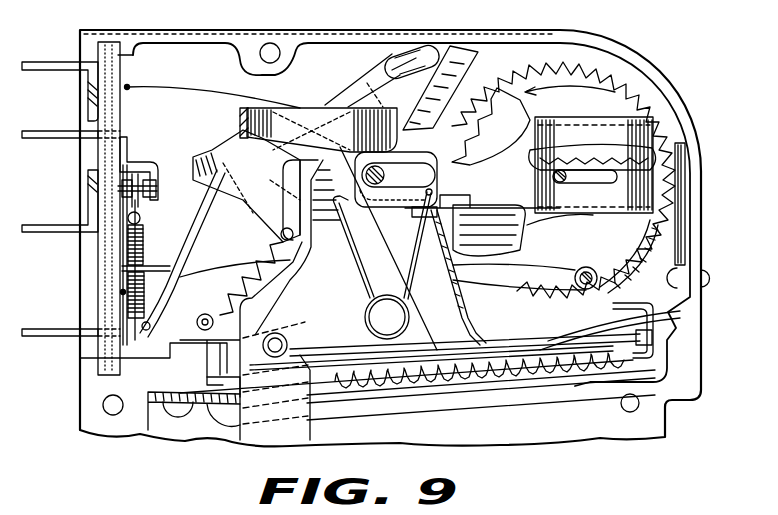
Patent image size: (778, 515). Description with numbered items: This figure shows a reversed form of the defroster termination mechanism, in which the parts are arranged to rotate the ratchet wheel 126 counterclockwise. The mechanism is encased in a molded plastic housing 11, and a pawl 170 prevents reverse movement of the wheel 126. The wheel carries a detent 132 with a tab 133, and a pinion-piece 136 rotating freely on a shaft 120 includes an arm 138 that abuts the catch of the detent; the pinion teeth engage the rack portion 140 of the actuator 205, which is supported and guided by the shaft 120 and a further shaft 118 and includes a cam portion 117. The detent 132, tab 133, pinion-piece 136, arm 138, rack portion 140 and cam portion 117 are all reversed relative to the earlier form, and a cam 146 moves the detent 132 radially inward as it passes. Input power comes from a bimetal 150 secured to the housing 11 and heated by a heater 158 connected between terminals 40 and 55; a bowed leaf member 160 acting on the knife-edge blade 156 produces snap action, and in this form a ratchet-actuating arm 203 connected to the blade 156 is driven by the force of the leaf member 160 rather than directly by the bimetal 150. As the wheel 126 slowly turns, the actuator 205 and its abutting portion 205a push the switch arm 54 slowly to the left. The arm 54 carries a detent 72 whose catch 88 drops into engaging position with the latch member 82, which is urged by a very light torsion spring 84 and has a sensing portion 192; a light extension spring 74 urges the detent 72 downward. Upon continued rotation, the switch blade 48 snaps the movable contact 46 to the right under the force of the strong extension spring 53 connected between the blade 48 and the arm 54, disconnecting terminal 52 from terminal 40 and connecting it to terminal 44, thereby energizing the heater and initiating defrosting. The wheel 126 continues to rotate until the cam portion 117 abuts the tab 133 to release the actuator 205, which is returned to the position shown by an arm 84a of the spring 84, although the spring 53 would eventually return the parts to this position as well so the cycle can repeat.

The housing 11 is at (178, 36).
The terminal 55 is at (52, 62).
The terminal 44 is at (52, 131).
The terminal 40 is at (52, 225).
The terminal 52 is at (52, 329).
The movable contact 46 is at (140, 165).
The contact arm 48 is at (152, 186).
The extension spring 53 is at (145, 235).
The arm 54 is at (240, 118).
The extension spring 74 is at (270, 262).
The catch portion 88 is at (320, 163).
The detent member 72 is at (408, 63).
The abutting portion 205a is at (294, 107).
The actuator 205 is at (472, 160).
The cam 146 is at (490, 60).
The ratchet wheel 126 is at (578, 77).
The rack portion 140 is at (610, 147).
The pinion-piece 136 is at (613, 178).
The shaft 120 is at (535, 182).
The cam portion 117 is at (520, 188).
The shaft 118 is at (388, 174).
The tab 133 is at (522, 226).
The arm 138 is at (555, 228).
The detent 132 is at (530, 258).
The pawl 170 is at (672, 231).
The leaf member 160 is at (600, 316).
The blade 156 is at (520, 330).
The latch member 82 is at (320, 262).
The torsion spring 84 is at (388, 290).
The spring arm 84a is at (418, 248).
The ratchet-actuating arm 203 is at (458, 310).
The heating element 158 is at (465, 388).
The bimetal 150 is at (367, 388).
The sensing portion 192 is at (260, 445).